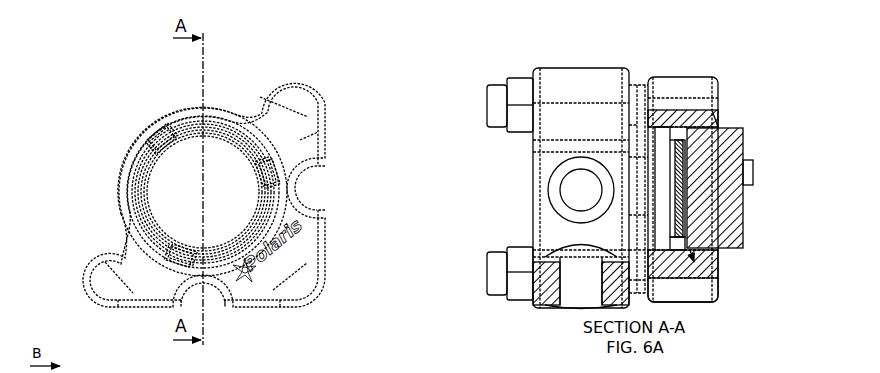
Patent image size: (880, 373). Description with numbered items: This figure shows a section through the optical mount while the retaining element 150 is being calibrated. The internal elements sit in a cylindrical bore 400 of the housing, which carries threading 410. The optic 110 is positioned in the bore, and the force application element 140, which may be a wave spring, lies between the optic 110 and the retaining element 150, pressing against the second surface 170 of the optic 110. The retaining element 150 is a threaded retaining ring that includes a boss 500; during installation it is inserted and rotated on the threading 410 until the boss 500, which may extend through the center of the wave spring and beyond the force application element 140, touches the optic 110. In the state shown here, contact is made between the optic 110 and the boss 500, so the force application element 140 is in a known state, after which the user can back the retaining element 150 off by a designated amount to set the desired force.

The optic 110 is at (713, 180).
The force application element 140 is at (717, 278).
The retaining element 150 is at (720, 300).
The second surface 170 is at (681, 169).
The cylindrical bore 400 is at (749, 159).
The threading 410 is at (684, 126).
The boss 500 is at (672, 246).